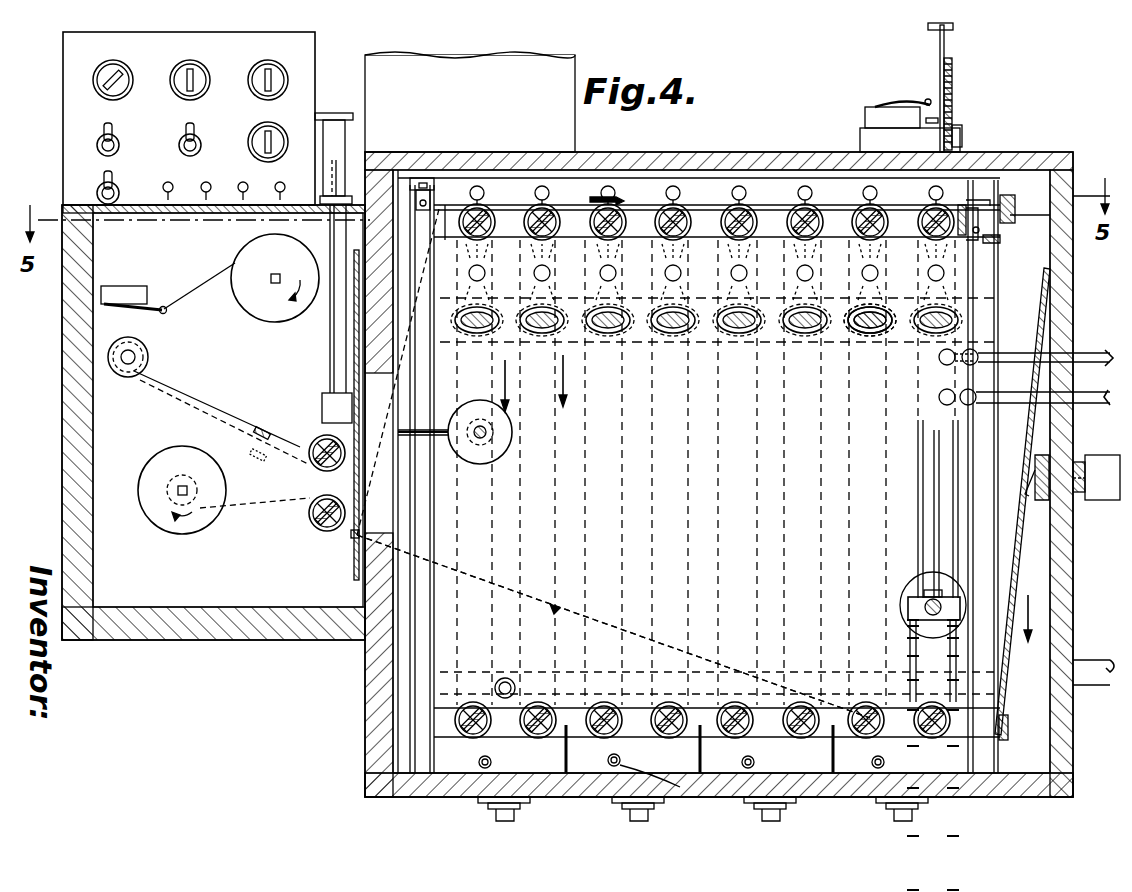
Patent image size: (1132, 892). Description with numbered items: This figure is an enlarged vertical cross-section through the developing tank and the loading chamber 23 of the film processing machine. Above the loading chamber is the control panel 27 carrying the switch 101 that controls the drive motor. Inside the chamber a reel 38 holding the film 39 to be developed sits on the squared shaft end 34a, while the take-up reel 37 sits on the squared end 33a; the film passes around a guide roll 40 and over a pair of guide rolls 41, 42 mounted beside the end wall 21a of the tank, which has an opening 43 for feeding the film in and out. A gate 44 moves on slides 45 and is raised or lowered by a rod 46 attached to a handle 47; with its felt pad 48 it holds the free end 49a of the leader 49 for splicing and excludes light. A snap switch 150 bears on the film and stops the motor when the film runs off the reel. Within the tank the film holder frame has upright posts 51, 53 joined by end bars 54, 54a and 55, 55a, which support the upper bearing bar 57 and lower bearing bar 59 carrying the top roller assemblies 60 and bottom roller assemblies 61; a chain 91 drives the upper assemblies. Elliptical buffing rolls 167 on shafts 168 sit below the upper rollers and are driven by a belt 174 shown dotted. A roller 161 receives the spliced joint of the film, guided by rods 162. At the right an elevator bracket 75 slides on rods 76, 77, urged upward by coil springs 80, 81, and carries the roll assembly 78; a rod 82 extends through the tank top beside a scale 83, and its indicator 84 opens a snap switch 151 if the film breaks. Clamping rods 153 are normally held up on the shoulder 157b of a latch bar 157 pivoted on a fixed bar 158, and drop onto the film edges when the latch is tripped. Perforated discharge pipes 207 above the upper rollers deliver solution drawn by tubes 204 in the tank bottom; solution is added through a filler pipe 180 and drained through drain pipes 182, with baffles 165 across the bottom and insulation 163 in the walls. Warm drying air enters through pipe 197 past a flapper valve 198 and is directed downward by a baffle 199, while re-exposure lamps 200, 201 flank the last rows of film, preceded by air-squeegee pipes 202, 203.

The switch 101 is at (93, 80).
The control panel 27 is at (78, 142).
The handle 47 is at (337, 140).
The film supply compartment 23 is at (170, 590).
The snap switch 150 is at (124, 292).
The reel 38 is at (244, 252).
The squared end 34a is at (272, 284).
The film 39 is at (196, 288).
The guide roll 40 is at (126, 377).
The free end 49a is at (262, 460).
The leader 49 is at (264, 505).
The take-up reel 37 is at (152, 470).
The squared end 33a is at (180, 496).
The opening 43 is at (352, 480).
The guide roll 42 is at (318, 528).
The guide roll 41 is at (322, 425).
The gate 44 is at (354, 410).
The slides 45 is at (354, 326).
The rod 46 is at (334, 352).
The felt pad 48 is at (353, 539).
The end wall 21a is at (370, 688).
The upright post 51 is at (410, 640).
The end bar 54a is at (400, 737).
The end bar 54 is at (408, 215).
The rods 153 is at (652, 190).
The perforated discharge pipes 207 is at (543, 189).
The top roller assemblies 60 is at (545, 216).
The upper bearing bar 57 is at (443, 245).
The chain 91 is at (834, 310).
The buffing rolls 167 is at (760, 360).
The shafts 168 is at (860, 334).
The second belt 174 is at (764, 360).
The roller 161 is at (505, 418).
The guide rods 162 is at (438, 434).
The filler pipe 180 is at (682, 660).
The lower bearing bar 59 is at (690, 728).
The bottom roller assemblies 61 is at (490, 735).
The baffles 165 is at (890, 762).
The drain pipes 182 is at (520, 814).
The tubes 204 is at (671, 794).
The layer of insulation 163 is at (1000, 775).
The upright post 53 is at (988, 300).
The end bar 55 is at (1025, 219).
The end bar 55a is at (1017, 734).
The latch bar 157 is at (965, 205).
The shoulder 157b is at (988, 204).
The fixed bar 158 is at (1000, 250).
The re-exposure lamp 200 is at (972, 353).
The re-exposure lamp 201 is at (1036, 366).
The pipe 202 is at (960, 393).
The pipe 203 is at (944, 400).
The baffle 199 is at (1030, 565).
The pipe 197 is at (1090, 455).
The outlet coupling 198 is at (1048, 490).
The rod 76 is at (915, 510).
The rod 77 is at (960, 535).
The roll assembly 78 is at (908, 592).
The bracket 75 is at (945, 605).
The coil spring 80 is at (908, 663).
The coil spring 81 is at (960, 660).
The rod 82 is at (940, 74).
The scale 83 is at (952, 74).
The snap switch 151 is at (890, 104).
The indicator 84 is at (952, 130).